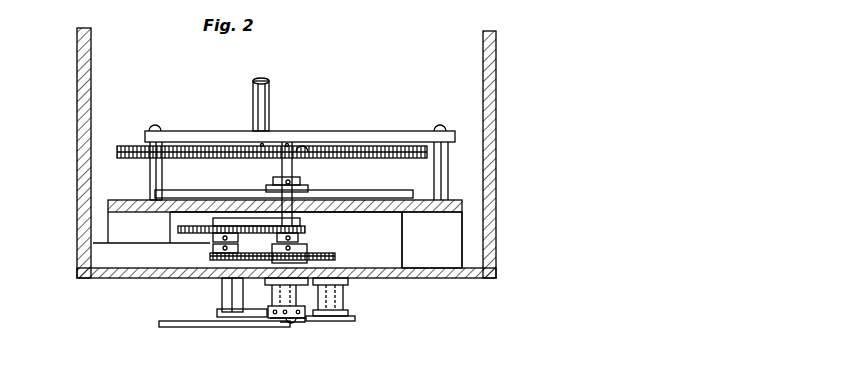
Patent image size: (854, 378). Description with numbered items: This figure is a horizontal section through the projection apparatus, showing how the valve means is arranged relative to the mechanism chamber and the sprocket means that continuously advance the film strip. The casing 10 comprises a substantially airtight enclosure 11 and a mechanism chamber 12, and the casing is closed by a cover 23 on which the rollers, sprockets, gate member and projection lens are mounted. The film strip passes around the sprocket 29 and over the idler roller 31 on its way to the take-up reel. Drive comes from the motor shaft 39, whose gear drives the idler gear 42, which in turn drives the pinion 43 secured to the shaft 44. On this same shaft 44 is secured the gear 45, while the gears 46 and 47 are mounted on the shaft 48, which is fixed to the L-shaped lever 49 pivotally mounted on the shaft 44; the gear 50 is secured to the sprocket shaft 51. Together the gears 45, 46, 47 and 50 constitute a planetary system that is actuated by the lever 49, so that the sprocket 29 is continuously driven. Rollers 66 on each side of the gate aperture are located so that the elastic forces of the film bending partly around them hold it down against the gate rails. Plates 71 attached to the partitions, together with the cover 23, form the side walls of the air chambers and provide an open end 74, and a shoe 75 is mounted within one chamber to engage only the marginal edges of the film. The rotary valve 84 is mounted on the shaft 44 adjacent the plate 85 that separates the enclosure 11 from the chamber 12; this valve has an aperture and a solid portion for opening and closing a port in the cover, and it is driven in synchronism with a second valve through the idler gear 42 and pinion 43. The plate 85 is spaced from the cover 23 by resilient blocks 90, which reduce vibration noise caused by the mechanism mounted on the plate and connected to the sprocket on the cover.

The casing 10 is at (499, 107).
The airtight enclosure 11 is at (110, 101).
The mechanism chamber 12 is at (378, 262).
The cover 23 is at (470, 274).
The sprocket 29 is at (270, 318).
The idler roller 31 is at (345, 321).
The motor shaft 39 is at (268, 100).
The idler gear 42 is at (350, 150).
The pinion 43 is at (302, 150).
The shaft 44 is at (292, 170).
The gear 45 is at (305, 229).
The gear 46 is at (178, 229).
The gear 47 is at (207, 258).
The shaft 48 is at (213, 245).
The L-shaped lever 49 is at (197, 180).
The gear 50 is at (335, 257).
The sprocket shaft 51 is at (292, 322).
The rollers 66 is at (222, 297).
The plates 71 is at (185, 325).
The open end 74 is at (168, 312).
The shoe 75 is at (248, 314).
The rotary valve 84 is at (370, 192).
The plate 85 is at (413, 205).
The resilient blocks 90 is at (108, 233).